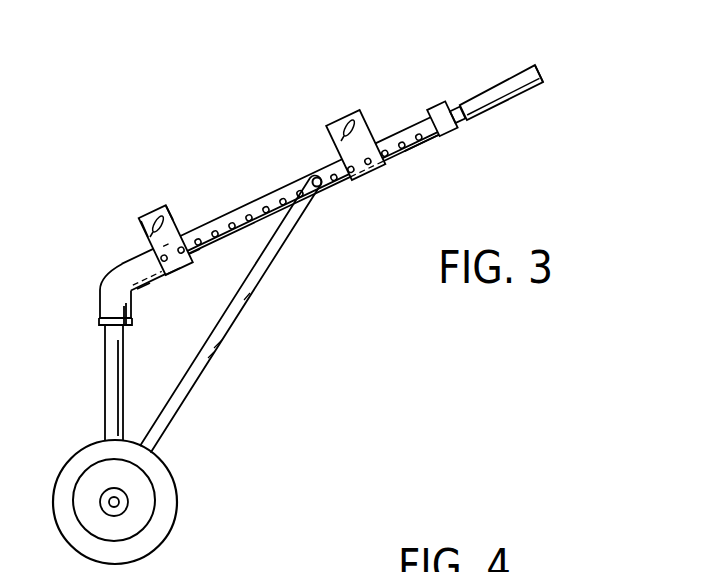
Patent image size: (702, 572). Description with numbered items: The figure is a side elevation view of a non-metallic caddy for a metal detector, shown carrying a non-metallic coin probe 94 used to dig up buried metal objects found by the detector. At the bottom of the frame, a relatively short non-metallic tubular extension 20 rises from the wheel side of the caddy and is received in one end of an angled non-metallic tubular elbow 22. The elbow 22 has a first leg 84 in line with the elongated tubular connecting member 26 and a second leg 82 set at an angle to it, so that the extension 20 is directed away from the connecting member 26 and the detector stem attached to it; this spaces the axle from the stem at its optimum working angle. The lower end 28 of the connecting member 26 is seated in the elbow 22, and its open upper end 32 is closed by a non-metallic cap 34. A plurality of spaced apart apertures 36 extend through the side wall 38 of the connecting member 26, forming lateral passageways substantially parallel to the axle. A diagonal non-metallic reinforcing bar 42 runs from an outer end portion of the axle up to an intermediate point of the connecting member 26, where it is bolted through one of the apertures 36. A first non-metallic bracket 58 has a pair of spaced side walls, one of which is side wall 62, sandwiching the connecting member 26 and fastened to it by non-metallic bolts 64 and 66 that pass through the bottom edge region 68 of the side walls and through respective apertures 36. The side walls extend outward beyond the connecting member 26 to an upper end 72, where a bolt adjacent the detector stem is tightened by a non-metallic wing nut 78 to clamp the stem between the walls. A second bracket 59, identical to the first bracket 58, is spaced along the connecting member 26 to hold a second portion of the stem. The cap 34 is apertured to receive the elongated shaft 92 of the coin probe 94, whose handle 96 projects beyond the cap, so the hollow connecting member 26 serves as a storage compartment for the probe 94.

The tubular extension 20 is at (105, 378).
The tubular elbow 22 is at (98, 286).
The tubular connecting member 26 is at (282, 189).
The lower end 28 is at (147, 250).
The open upper end 32 is at (437, 131).
The cap 34 is at (437, 108).
The apertures 36 is at (410, 150).
The side wall 38 is at (323, 187).
The reinforcing bar 42 is at (223, 348).
The first bracket 58 is at (160, 203).
The second bracket 59 is at (353, 108).
The side wall 62 is at (173, 228).
The bolt 64 is at (168, 268).
The bolt 66 is at (197, 252).
The bottom edge region 68 is at (190, 270).
The upper end 72 is at (147, 235).
The wing nut 78 is at (163, 203).
The second leg 82 is at (98, 312).
The first leg 84 is at (115, 262).
The elongated shaft 92 is at (453, 107).
The coin probe 94 is at (541, 73).
The handle 96 is at (510, 73).